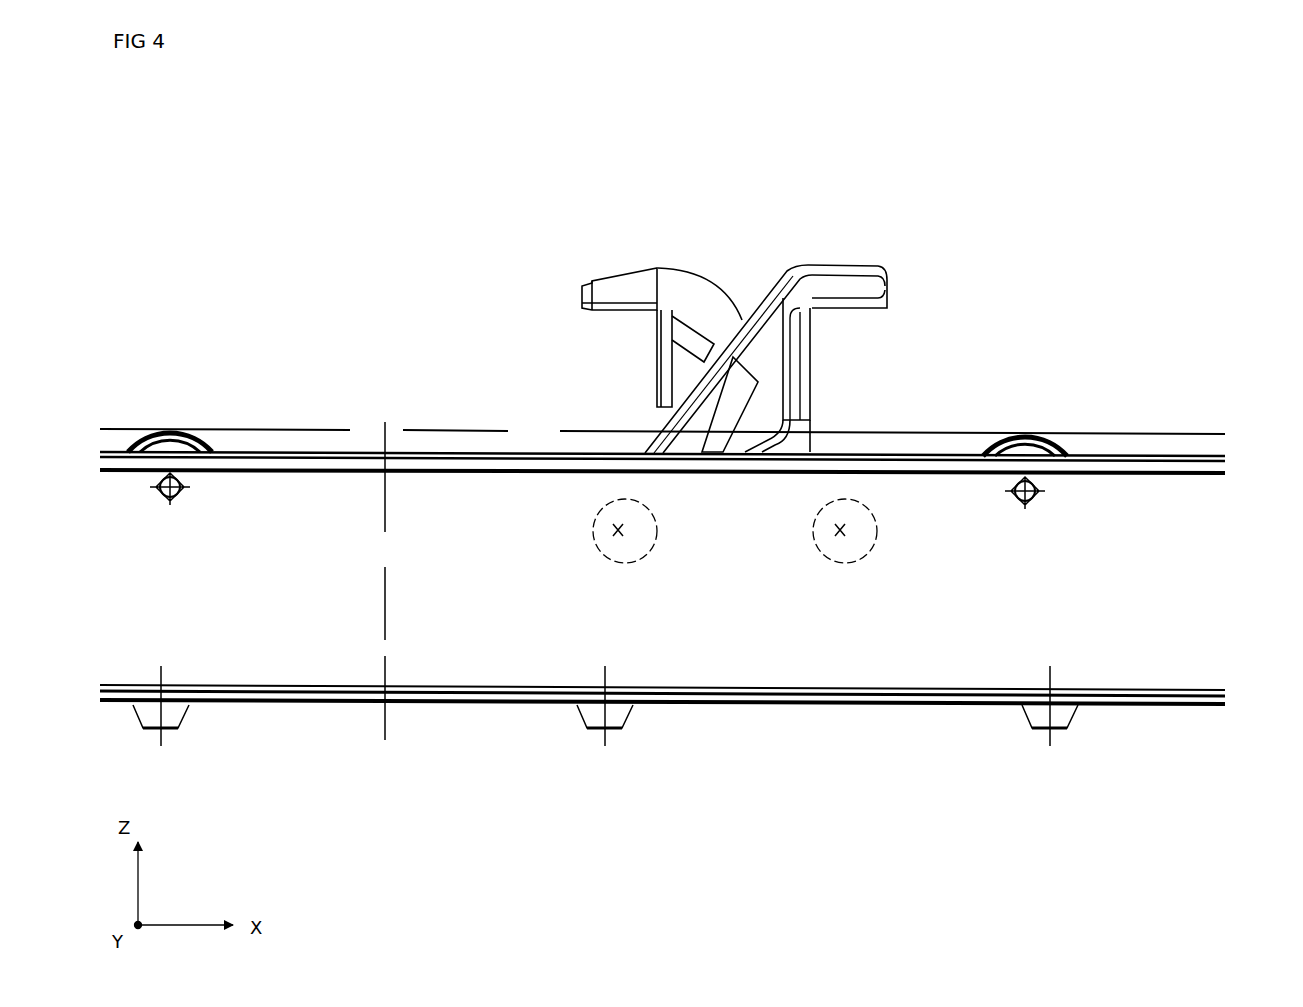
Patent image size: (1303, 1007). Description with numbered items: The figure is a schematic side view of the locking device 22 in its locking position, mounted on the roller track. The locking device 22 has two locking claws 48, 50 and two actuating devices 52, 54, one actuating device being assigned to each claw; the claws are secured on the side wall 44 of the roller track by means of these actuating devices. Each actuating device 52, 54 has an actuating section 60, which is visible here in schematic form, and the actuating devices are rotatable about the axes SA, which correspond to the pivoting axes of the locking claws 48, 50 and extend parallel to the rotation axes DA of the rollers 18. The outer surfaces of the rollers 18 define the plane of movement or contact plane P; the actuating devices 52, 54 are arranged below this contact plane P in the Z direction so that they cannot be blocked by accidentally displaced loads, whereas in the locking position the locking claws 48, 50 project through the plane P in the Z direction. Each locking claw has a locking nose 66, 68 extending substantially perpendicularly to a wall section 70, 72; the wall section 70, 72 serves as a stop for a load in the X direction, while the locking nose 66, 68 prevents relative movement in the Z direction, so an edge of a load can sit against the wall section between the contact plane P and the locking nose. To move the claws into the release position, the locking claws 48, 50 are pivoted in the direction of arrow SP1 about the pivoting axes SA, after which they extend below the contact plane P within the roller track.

The roller 18 is at (178, 431).
The locking device 22 is at (745, 286).
The side wall 44 is at (465, 655).
The locking claw 48 is at (631, 236).
The locking claw 50 is at (807, 310).
The actuating device 52 is at (590, 590).
The actuating device 54 is at (817, 570).
The actuating section 60 is at (600, 553).
The locking nose 66 is at (583, 286).
The locking nose 68 is at (882, 296).
The wall section 70 is at (655, 371).
The wall section 72 is at (812, 372).
The contact plane P is at (1225, 431).
The rotation axis DA is at (162, 500).
The pivoting axis SA is at (618, 542).
The pivoting direction arrow SP1 is at (528, 325).